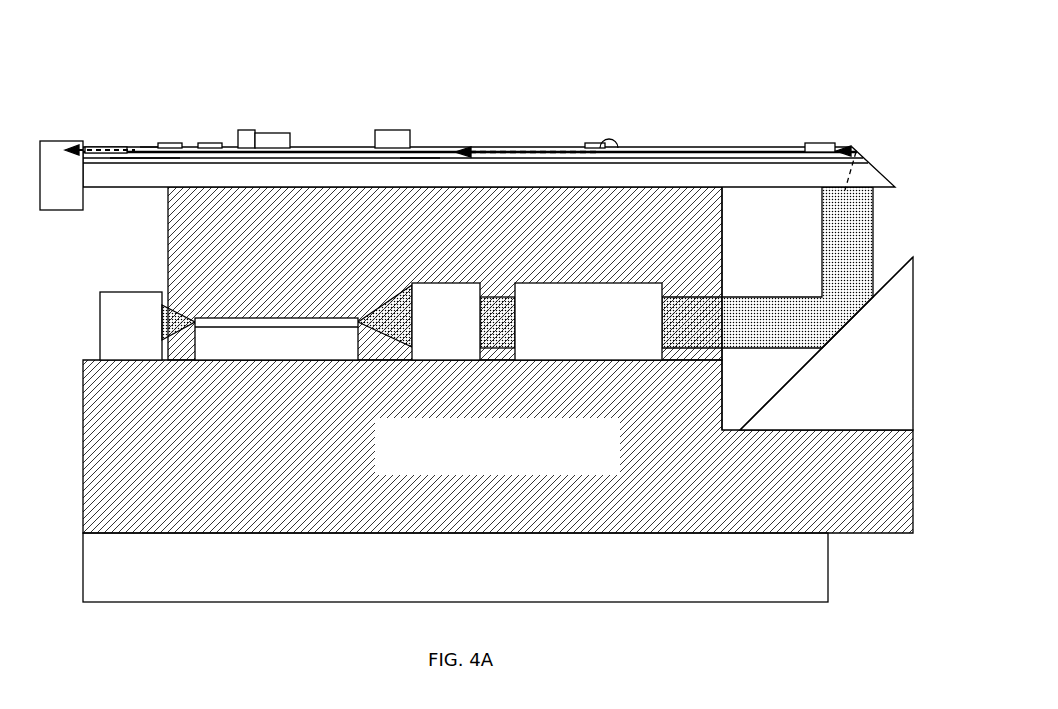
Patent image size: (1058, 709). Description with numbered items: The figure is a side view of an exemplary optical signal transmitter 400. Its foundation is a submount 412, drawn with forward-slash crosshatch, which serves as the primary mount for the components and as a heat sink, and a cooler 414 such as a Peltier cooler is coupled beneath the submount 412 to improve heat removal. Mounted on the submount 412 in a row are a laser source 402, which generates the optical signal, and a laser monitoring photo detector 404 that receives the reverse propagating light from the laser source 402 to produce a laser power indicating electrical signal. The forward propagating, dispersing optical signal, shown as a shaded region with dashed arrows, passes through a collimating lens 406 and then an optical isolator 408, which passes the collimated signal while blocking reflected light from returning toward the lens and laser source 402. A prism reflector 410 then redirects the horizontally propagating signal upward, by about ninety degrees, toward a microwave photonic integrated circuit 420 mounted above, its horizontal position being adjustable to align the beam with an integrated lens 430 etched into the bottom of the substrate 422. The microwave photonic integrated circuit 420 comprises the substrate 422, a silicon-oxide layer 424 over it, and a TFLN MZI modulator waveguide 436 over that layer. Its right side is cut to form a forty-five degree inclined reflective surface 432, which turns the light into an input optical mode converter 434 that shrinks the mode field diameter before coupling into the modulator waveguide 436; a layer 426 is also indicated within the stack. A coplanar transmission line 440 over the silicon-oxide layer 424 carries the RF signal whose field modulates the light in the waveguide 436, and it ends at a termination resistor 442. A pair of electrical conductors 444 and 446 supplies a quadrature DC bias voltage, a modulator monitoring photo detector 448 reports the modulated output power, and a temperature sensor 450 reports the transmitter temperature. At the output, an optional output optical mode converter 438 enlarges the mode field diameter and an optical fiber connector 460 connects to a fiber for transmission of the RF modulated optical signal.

The optical signal transmitter 400 is at (638, 28).
The laser source 402 is at (285, 318).
The laser monitoring photo detector 404 is at (147, 326).
The collimating lens 406 is at (463, 321).
The optical isolator 408 is at (588, 321).
The prism reflector 410 is at (826, 343).
The submount 412 is at (498, 446).
The cooler 414 is at (455, 567).
The microwave photonic integrated circuit 420 is at (695, 140).
The substrate 422 is at (489, 167).
The silicon-oxide layer 424 is at (147, 158).
The cladding layer 426 is at (150, 150).
The integrated lens 430 is at (838, 195).
The 45-degree inclined reflective surface 432 is at (858, 150).
The input optical mode converter 434 is at (820, 143).
The TFLN MZI modulator waveguide 436 is at (420, 153).
The output optical mode converter 438 is at (102, 147).
The coplanar transmission line 440 is at (520, 132).
The termination resistor 442 is at (247, 130).
The electrical conductor 444 is at (165, 142).
The electrical conductor 446 is at (210, 142).
The modulator monitoring photo detector 448 is at (272, 133).
The temperature sensor 450 is at (393, 130).
The optical fiber connector 460 is at (45, 210).